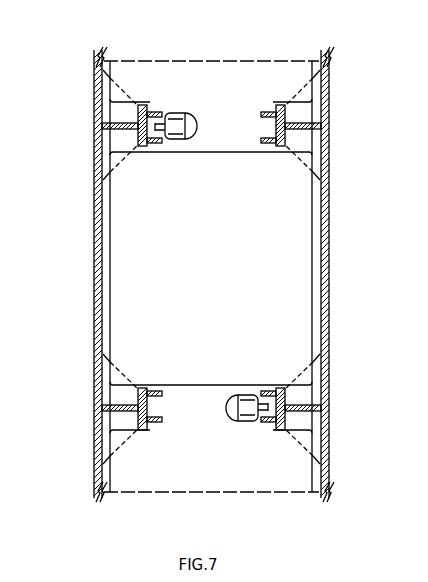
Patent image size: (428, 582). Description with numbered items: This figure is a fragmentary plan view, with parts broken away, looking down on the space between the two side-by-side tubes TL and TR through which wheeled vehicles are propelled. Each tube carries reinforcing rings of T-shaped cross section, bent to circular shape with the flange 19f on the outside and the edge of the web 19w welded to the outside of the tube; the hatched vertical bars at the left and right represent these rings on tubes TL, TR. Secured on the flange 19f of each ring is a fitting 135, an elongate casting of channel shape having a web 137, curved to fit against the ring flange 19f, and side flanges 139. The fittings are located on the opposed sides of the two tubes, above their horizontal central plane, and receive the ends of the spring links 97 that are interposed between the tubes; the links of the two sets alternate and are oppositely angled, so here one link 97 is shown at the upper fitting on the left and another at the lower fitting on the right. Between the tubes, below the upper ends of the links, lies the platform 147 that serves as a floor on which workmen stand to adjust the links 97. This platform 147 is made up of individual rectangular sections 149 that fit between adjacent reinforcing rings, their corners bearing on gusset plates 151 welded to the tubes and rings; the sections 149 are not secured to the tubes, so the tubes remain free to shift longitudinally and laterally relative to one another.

The tube TL is at (94, 257).
The tube TR is at (331, 261).
The web 19w is at (95, 103).
The flange 19f is at (97, 133).
The link 97 is at (177, 143).
The fitting 135 is at (209, 273).
The web 137 is at (276, 125).
The side flanges 139 is at (272, 111).
The platform 147 is at (218, 61).
The rectangular sections 149 is at (234, 91).
The gusset plates 151 is at (95, 70).